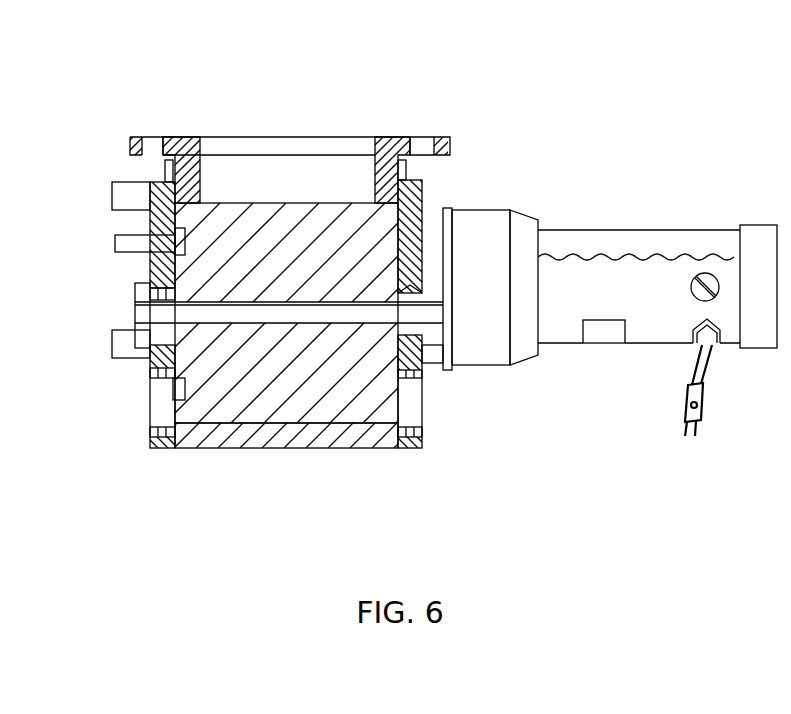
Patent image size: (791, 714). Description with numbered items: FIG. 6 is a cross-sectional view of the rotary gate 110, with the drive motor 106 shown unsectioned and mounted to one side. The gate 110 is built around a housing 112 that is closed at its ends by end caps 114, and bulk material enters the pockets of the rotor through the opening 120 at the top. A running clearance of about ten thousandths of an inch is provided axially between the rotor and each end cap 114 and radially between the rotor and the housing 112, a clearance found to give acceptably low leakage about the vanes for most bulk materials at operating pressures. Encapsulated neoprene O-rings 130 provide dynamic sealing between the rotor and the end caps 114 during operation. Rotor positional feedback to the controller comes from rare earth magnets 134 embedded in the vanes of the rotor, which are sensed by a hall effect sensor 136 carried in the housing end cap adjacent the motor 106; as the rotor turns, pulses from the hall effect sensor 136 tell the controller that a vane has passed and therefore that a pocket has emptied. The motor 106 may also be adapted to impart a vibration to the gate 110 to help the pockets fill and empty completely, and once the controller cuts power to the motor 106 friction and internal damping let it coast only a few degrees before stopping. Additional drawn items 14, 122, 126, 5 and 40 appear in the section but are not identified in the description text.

The drive assembly 14 is at (497, 84).
The opening 120 is at (286, 118).
The rare earth magnets 134 is at (177, 232).
The end caps 114 is at (172, 182).
The end plate 122 is at (441, 418).
The encapsulated neoprene O-rings 130 is at (150, 282).
The shaft 126 is at (150, 297).
The hall effect sensor 136 is at (133, 228).
The pin 5 is at (115, 245).
The retainer 40 is at (137, 402).
The gate 110 is at (236, 473).
The housing 112 is at (350, 448).
The motor 106 is at (624, 180).